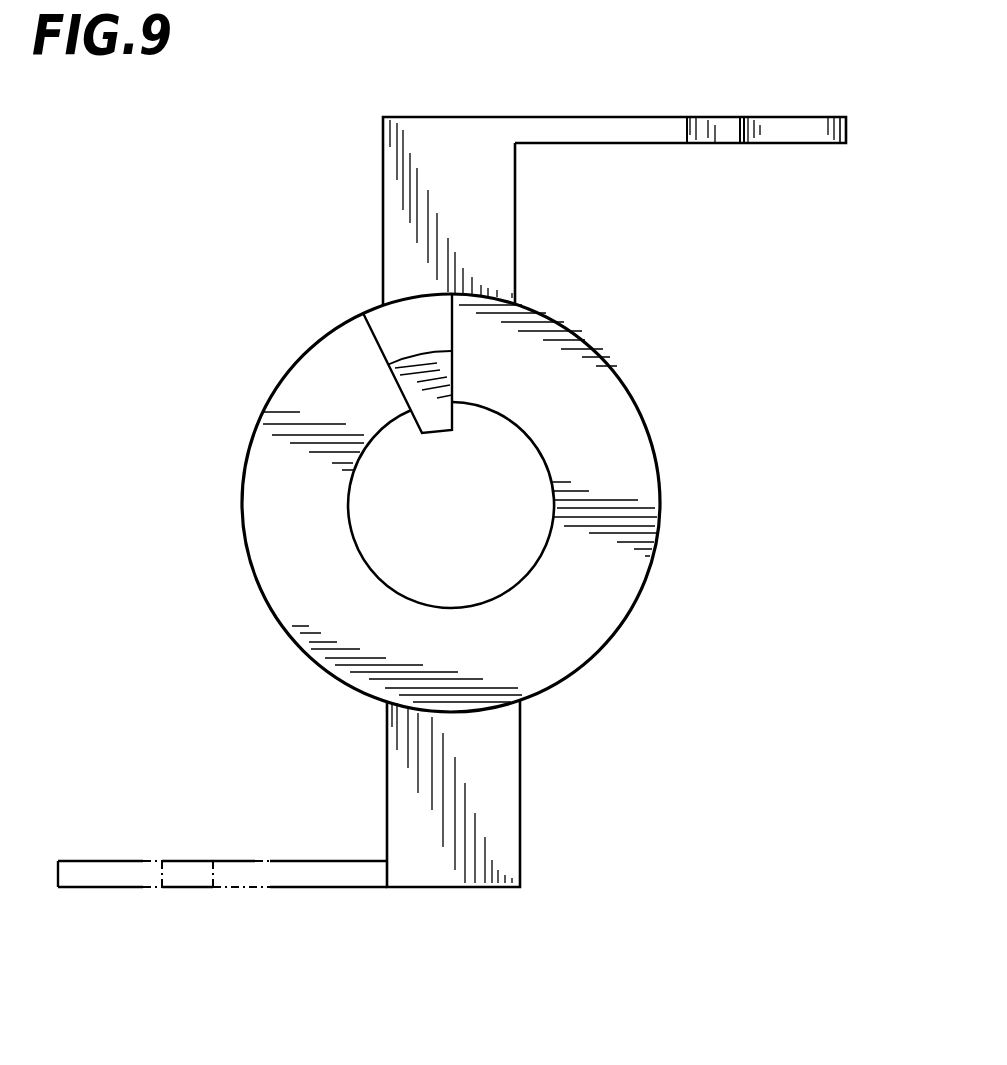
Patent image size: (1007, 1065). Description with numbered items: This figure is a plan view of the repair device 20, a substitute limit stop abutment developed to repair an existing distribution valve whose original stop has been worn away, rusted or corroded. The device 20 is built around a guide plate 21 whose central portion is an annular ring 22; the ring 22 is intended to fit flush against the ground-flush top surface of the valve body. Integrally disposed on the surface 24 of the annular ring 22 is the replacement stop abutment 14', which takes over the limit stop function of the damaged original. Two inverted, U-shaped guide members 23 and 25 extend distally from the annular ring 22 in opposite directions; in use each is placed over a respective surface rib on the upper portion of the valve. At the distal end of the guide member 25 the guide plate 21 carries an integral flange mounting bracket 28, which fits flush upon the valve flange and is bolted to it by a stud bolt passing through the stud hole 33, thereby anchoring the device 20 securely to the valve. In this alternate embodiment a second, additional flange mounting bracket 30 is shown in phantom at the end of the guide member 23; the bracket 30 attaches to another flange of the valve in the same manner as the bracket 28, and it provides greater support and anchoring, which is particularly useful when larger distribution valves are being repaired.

The repair device 20 is at (474, 460).
The guide plate 21 is at (660, 490).
The annular ring 22 is at (509, 652).
The guide member 23 is at (513, 852).
The surface 24 is at (596, 392).
The guide member 25 is at (500, 232).
The flange mounting bracket 28 is at (813, 123).
The additional flange mounting bracket 30 is at (252, 860).
The stud hole 33 is at (715, 143).
The replacement stop abutment 14' is at (355, 363).